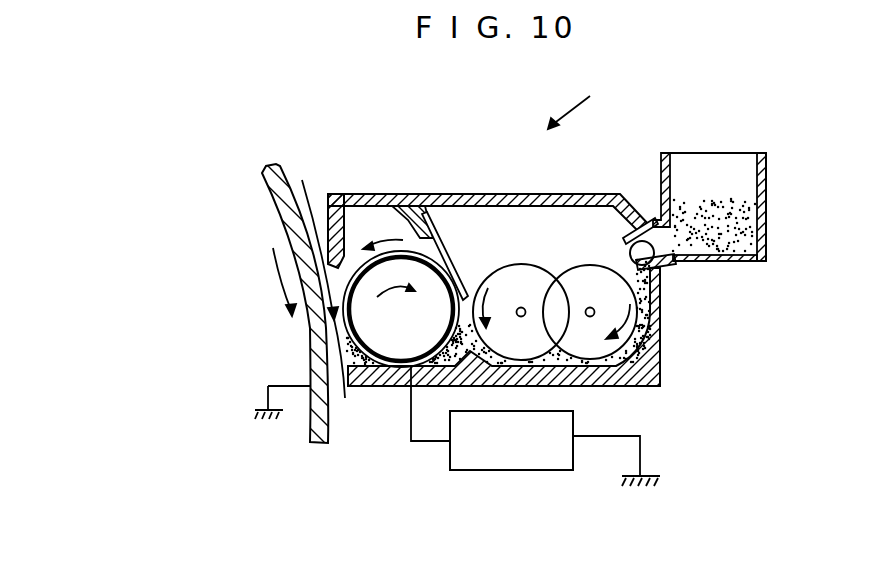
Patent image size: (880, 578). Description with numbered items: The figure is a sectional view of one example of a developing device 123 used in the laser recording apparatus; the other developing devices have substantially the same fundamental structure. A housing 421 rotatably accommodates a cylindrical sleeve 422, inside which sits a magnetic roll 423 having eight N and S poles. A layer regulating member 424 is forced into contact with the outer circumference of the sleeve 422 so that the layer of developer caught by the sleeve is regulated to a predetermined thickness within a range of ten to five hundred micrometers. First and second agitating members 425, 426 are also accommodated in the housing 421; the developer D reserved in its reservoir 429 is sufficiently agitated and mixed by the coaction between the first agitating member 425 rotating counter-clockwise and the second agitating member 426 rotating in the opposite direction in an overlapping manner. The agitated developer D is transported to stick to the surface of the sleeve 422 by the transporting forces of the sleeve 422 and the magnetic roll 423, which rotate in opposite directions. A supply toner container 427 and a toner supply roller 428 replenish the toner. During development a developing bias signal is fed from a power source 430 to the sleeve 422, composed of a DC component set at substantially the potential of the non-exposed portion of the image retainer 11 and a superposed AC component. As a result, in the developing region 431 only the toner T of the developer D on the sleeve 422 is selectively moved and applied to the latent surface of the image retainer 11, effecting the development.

The image retainer 11 is at (268, 198).
The developing device 123 is at (578, 100).
The housing 421 is at (588, 194).
The cylindrical sleeve 422 is at (380, 305).
The magnetic roll 423 is at (346, 328).
The layer regulating member 424 is at (440, 242).
The first agitating member 425 is at (517, 278).
The second agitating member 426 is at (590, 278).
The supply toner container 427 is at (714, 155).
The toner supply roller 428 is at (656, 266).
The reservoir 429 is at (615, 355).
The power source 430 is at (523, 473).
The developing region 431 is at (295, 297).
The developer D is at (637, 332).
The toner T is at (737, 212).